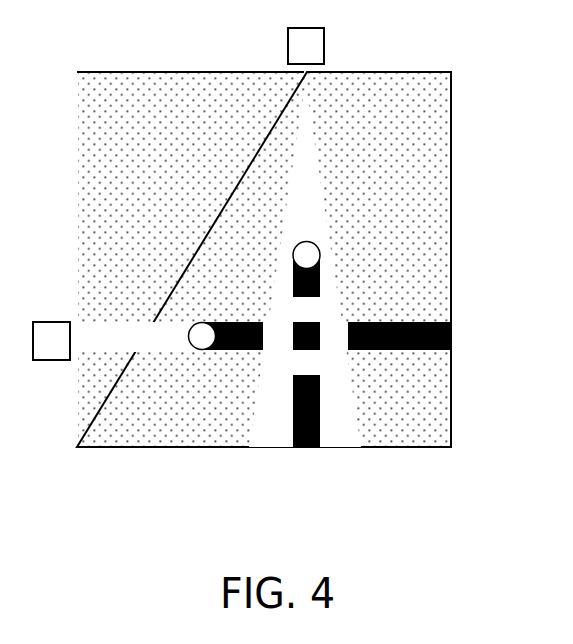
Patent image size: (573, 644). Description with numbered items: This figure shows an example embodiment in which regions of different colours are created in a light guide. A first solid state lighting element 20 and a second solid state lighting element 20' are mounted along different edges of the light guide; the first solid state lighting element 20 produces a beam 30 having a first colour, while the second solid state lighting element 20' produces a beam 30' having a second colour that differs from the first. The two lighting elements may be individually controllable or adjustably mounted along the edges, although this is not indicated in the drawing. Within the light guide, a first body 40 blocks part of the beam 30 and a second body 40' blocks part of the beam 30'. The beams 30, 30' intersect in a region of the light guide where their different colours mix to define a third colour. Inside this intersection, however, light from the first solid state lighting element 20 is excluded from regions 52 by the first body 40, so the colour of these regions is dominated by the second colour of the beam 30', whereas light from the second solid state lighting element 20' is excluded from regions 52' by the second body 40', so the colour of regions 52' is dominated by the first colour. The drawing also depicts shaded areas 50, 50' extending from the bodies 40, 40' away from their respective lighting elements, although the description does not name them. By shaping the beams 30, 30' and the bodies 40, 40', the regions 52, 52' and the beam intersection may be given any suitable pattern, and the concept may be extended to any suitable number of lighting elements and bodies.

The first solid state lighting element 20 is at (269, 46).
The second solid state lighting element 20' is at (51, 286).
The beam 30 is at (323, 265).
The beam 30' is at (308, 315).
The first body 40 is at (306, 200).
The second body 40' is at (204, 279).
The first shadow 50 is at (351, 411).
The second shadow 50' is at (443, 336).
The regions 52 is at (349, 313).
The regions 52' is at (304, 337).